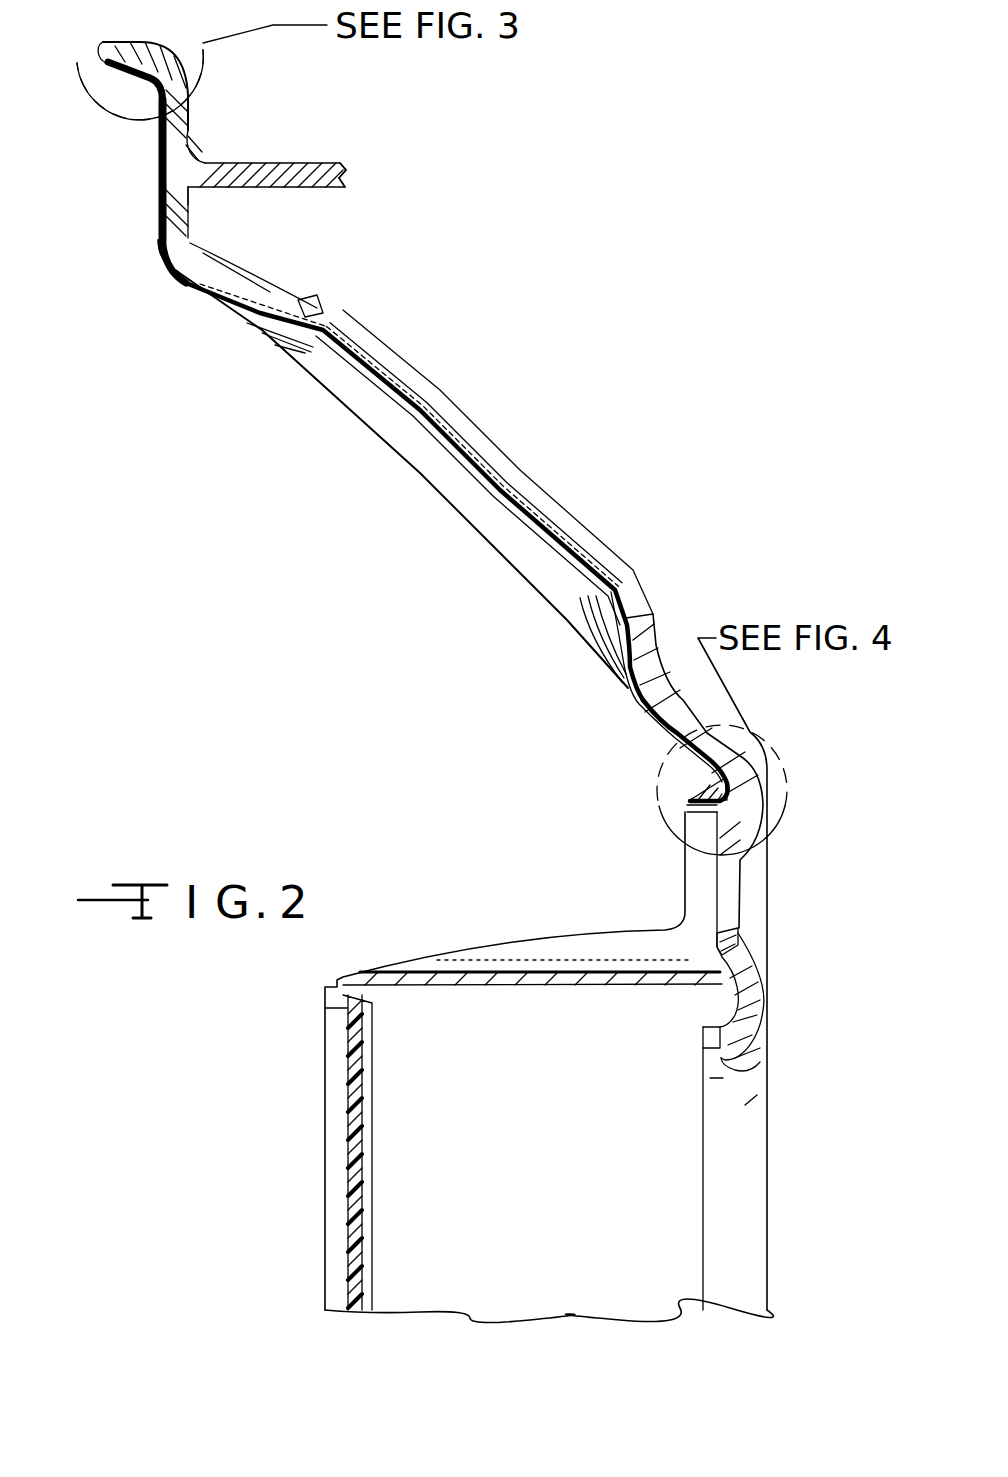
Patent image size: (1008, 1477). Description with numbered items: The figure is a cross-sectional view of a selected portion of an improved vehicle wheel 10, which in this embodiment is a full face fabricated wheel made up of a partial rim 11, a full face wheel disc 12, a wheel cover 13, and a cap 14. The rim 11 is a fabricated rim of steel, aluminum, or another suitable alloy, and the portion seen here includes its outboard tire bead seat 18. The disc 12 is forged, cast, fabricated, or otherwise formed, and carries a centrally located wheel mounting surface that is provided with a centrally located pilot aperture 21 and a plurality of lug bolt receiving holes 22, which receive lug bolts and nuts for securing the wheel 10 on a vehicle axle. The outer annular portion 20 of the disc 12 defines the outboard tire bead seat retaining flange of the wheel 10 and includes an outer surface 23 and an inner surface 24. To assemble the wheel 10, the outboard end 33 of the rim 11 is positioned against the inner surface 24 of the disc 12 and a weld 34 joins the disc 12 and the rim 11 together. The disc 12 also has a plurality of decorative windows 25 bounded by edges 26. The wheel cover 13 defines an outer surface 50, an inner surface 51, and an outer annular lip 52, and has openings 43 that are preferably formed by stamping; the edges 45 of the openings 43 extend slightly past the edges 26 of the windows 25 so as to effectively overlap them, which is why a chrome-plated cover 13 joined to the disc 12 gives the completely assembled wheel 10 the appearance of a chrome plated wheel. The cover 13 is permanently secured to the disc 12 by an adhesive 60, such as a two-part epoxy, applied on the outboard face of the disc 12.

The vehicle wheel 10 is at (557, 355).
The partial rim 11 is at (338, 157).
The full face wheel disc 12 is at (268, 282).
The wheel cover 13 is at (622, 711).
The cap 14 is at (313, 1000).
The outboard tire bead seat 18 is at (283, 160).
The outer annular portion 20 is at (178, 58).
The pilot aperture 21 is at (753, 1062).
The lug bolt receiving holes 22 is at (739, 930).
The outer surface 23 is at (158, 206).
The inner surface 24 is at (192, 192).
The decorative windows 25 is at (343, 312).
The edges of the windows 26 is at (648, 608).
The outboard end 33 is at (158, 153).
The weld 34 is at (188, 162).
The openings 43 is at (340, 325).
The edges of the openings 45 is at (637, 617).
The outer surface 50 is at (173, 273).
The inner surface 51 is at (190, 238).
The outer annular lip 52 is at (125, 90).
The adhesive 60 is at (322, 298).